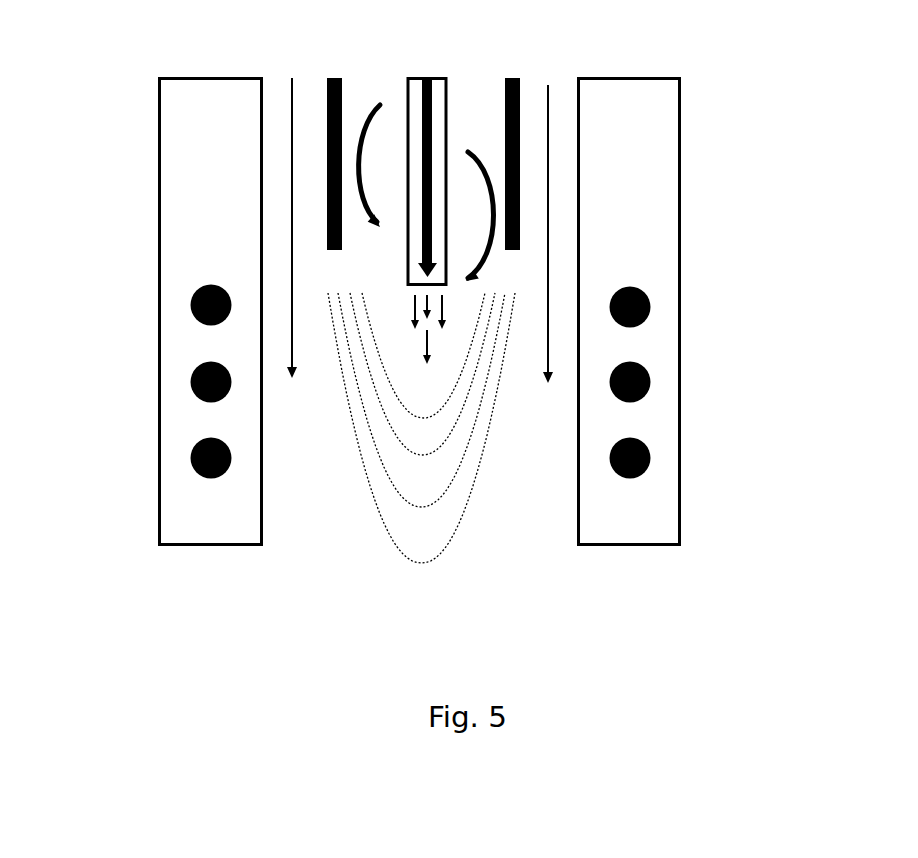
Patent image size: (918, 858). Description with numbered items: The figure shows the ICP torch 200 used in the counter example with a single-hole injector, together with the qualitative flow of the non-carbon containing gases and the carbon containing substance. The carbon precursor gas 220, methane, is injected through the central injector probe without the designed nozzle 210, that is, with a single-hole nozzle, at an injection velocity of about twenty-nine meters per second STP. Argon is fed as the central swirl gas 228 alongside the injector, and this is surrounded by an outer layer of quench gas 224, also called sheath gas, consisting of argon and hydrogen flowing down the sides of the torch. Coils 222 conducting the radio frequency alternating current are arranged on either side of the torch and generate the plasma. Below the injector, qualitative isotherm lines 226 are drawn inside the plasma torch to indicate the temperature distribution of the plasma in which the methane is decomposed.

The ICP torch 200 is at (323, 40).
The nozzle 210 is at (439, 282).
The carbon precursor gas 220 is at (422, 228).
The coils 222 is at (190, 308).
The quench gas (sheath gas) 224 is at (295, 355).
The isotherm lines 226 is at (478, 460).
The central swirl gas 228 is at (490, 173).